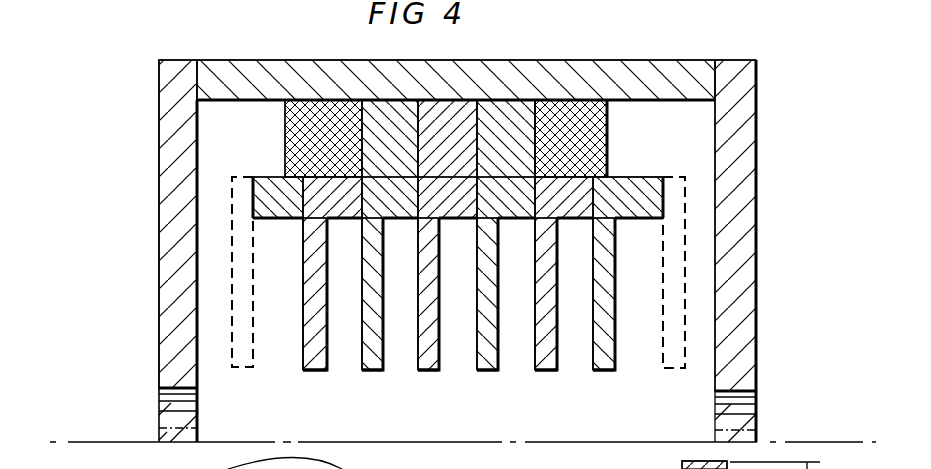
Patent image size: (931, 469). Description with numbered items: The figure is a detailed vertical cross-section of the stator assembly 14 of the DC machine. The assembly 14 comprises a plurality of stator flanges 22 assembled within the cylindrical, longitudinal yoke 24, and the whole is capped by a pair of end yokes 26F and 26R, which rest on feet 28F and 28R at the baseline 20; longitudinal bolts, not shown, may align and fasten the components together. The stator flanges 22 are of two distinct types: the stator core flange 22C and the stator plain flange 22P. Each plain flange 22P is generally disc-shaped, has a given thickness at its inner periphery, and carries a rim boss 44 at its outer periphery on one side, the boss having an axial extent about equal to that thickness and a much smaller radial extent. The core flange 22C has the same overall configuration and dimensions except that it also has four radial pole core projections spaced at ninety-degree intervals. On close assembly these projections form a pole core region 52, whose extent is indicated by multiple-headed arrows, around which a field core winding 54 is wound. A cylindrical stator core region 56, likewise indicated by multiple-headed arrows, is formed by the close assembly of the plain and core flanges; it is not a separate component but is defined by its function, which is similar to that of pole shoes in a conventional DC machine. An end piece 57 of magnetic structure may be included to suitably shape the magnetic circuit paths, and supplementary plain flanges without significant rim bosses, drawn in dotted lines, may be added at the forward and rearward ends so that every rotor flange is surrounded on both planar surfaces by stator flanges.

The stator assembly 14 is at (144, 268).
The base line 20 is at (91, 442).
The stator flanges 22 is at (427, 415).
The stator core flange 22C is at (379, 363).
The stator plain flange 22P is at (318, 363).
The longitudinal yoke 24 is at (465, 91).
The forward end yoke 26F is at (172, 171).
The rearward end yoke 26R is at (747, 280).
The front foot 28F is at (173, 402).
The rear foot 28R is at (757, 410).
The rim boss 44 is at (672, 468).
The pole core region 52 is at (535, 153).
The field core winding 54 is at (285, 136).
The stator core region 56 is at (655, 193).
The end piece 57 is at (268, 188).